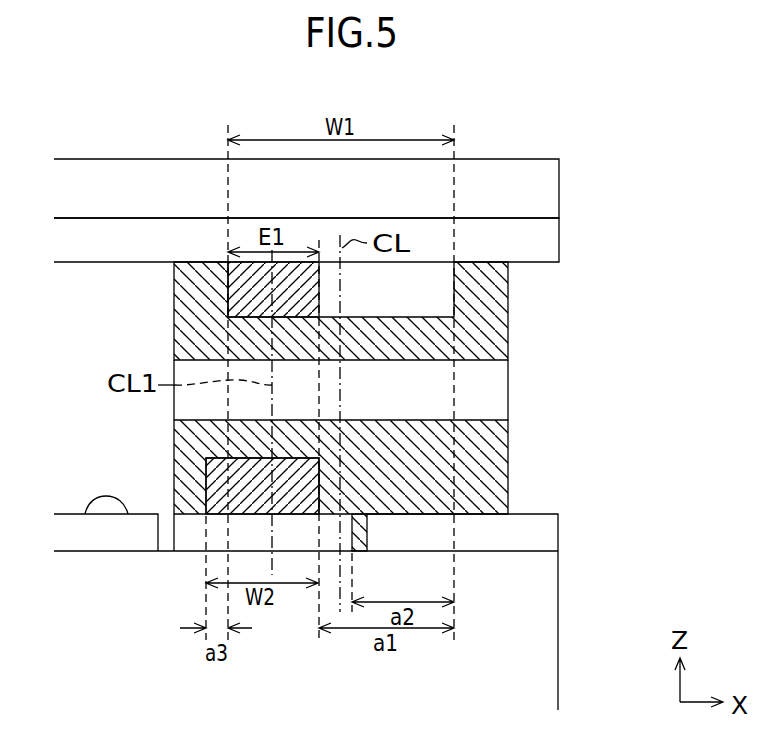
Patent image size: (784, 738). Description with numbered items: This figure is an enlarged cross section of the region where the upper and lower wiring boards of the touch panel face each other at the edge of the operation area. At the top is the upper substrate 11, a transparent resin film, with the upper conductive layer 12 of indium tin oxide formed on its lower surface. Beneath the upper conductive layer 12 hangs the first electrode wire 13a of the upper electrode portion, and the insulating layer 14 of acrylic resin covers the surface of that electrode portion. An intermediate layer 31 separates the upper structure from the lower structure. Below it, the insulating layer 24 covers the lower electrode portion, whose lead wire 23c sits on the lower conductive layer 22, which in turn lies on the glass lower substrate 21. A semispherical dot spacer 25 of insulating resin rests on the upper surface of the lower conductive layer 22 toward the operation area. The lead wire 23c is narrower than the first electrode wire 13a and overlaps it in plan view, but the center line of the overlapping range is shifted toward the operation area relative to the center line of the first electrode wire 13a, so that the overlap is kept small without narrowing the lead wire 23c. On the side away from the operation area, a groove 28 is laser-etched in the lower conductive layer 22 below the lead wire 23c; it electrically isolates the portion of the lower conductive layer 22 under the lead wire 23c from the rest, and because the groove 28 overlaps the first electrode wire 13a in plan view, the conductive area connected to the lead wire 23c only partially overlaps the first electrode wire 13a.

The upper substrate 11 is at (541, 193).
The upper conductive layer 12 is at (541, 243).
The first electrode wire 13a is at (437, 291).
The insulating layer 14 is at (497, 334).
The insulating layer 31 is at (487, 398).
The insulating layer 24 is at (497, 440).
The lead wire 23c is at (218, 476).
The dot spacer 25 is at (86, 505).
The groove 28 is at (363, 527).
The lower conductive layer 22 is at (540, 533).
The lower substrate 21 is at (540, 595).